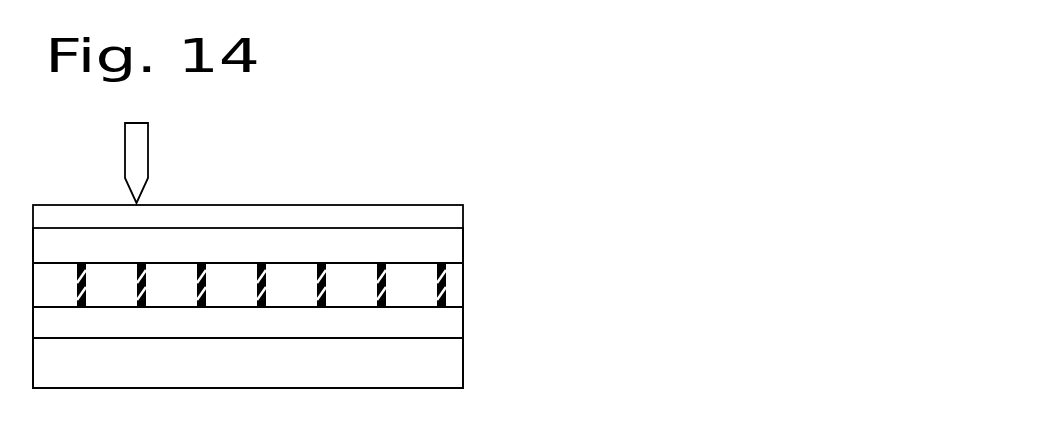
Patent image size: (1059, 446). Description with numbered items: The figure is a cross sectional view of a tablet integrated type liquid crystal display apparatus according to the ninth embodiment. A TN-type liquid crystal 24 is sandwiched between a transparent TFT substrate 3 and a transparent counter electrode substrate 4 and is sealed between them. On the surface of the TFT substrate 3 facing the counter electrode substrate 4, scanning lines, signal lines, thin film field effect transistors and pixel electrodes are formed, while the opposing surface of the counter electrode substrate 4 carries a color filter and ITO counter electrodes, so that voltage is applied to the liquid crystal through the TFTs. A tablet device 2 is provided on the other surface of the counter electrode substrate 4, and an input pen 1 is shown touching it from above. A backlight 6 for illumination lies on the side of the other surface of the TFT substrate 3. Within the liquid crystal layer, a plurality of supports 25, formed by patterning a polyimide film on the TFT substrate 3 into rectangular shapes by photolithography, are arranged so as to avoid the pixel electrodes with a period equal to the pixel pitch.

The input pen 1 is at (148, 152).
The tablet device 2 is at (398, 203).
The counter electrode substrate 4 is at (463, 239).
The TN-type liquid crystal 24 is at (463, 279).
The TFT substrate 3 is at (463, 322).
The backlight 6 is at (463, 362).
The supports 25 is at (200, 307).